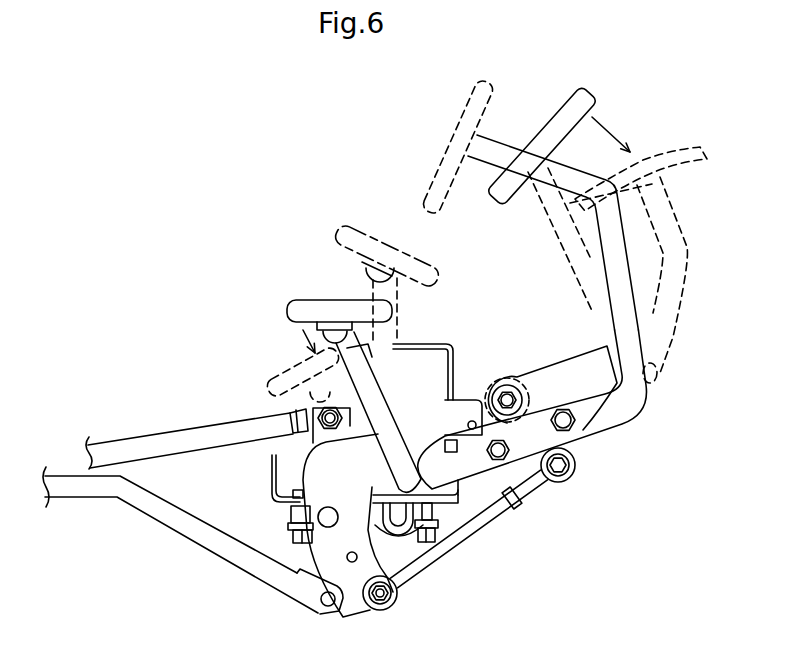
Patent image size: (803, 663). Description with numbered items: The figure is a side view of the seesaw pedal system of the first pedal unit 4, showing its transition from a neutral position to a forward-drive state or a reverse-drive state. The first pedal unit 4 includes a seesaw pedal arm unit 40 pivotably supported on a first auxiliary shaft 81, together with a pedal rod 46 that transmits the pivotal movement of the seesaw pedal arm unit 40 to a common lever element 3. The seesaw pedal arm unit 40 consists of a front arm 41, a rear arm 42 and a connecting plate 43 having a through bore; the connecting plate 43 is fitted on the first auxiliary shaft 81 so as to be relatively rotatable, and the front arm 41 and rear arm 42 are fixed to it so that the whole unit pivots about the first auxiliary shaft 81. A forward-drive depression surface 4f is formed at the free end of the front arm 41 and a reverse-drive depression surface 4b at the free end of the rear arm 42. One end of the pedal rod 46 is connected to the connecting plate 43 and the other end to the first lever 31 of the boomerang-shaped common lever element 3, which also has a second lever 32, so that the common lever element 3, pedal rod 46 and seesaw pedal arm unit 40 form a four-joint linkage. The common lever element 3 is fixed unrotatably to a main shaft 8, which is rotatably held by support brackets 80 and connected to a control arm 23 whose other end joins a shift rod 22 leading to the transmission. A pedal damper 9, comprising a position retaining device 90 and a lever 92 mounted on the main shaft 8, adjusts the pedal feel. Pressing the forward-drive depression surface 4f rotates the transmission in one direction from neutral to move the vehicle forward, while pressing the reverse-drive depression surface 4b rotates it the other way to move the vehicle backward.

The first pedal unit 4 is at (352, 188).
The forward-drive depression surface 4f is at (560, 118).
The reverse-drive depression surface 4b is at (320, 310).
The seesaw pedal arm unit 40 is at (640, 302).
The front arm 41 is at (617, 252).
The rear arm 42 is at (370, 387).
The connecting plate 43 is at (538, 405).
The pedal rod 46 is at (500, 520).
The common lever element 3 is at (298, 480).
The main shaft 8 is at (327, 518).
The pedal damper 9 is at (137, 433).
The position retaining device 90 is at (185, 440).
The lever 92 is at (293, 415).
The shift rod 22 is at (168, 512).
The control arm 23 is at (325, 560).
The first lever 31 is at (367, 567).
The second lever 32 is at (432, 447).
The support brackets 80 is at (433, 517).
The first auxiliary shaft 81 is at (508, 380).